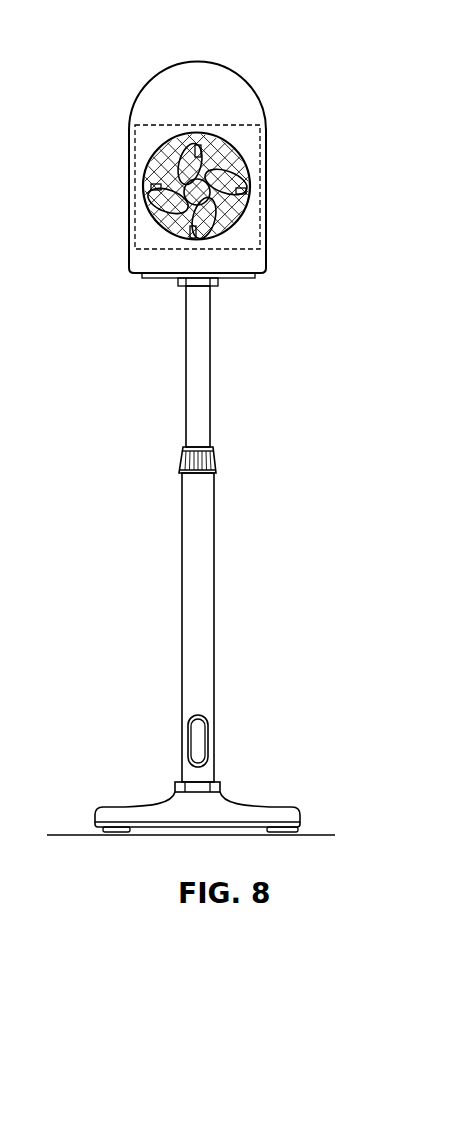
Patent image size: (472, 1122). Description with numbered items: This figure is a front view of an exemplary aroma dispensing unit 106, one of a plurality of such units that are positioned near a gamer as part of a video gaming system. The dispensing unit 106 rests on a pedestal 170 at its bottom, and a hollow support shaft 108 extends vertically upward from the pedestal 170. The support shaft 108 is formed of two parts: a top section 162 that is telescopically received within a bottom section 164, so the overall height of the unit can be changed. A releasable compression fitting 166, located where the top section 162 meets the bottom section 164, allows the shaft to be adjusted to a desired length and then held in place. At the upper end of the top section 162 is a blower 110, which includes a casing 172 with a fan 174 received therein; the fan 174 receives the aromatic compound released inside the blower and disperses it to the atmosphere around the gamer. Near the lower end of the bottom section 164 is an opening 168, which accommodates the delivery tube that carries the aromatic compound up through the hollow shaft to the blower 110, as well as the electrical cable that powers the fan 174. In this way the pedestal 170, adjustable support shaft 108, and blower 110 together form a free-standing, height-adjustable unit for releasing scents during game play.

The aroma dispensing unit 106 is at (151, 46).
The blower 110 is at (260, 86).
The casing 172 is at (137, 98).
The fan 174 is at (245, 180).
The support shaft 108 is at (220, 533).
The top section 162 is at (210, 377).
The releasable compression fitting 166 is at (214, 460).
The bottom section 164 is at (215, 633).
The opening 168 is at (205, 742).
The pedestal 170 is at (300, 821).